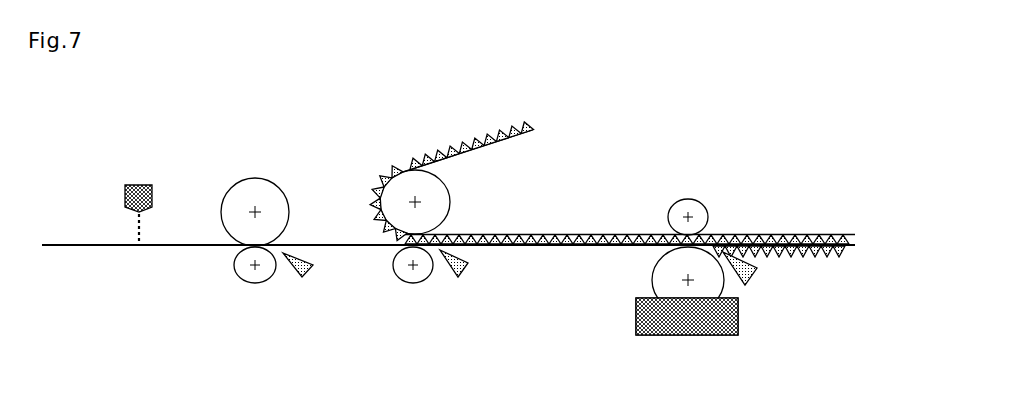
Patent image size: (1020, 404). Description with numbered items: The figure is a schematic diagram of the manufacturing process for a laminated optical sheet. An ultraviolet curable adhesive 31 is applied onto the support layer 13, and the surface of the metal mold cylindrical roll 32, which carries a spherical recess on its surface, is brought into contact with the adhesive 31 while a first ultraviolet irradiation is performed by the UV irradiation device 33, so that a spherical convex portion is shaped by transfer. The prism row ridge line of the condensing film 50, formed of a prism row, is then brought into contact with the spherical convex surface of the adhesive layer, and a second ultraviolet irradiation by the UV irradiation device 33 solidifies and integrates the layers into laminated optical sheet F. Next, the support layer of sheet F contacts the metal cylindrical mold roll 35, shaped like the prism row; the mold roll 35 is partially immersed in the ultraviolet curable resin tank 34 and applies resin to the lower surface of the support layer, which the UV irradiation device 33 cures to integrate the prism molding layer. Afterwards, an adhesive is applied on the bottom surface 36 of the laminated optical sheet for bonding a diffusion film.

The support layer 13 is at (98, 247).
The ultraviolet curable adhesive 31 is at (148, 230).
The metal mold cylindrical roll 32 is at (258, 190).
The UV irradiation device 33 is at (301, 278).
The ultraviolet curable resin tank 34 is at (678, 323).
The metal cylindrical mold roll 35 is at (648, 273).
The bottom surface 36 is at (827, 235).
The condensing film 50 is at (510, 142).